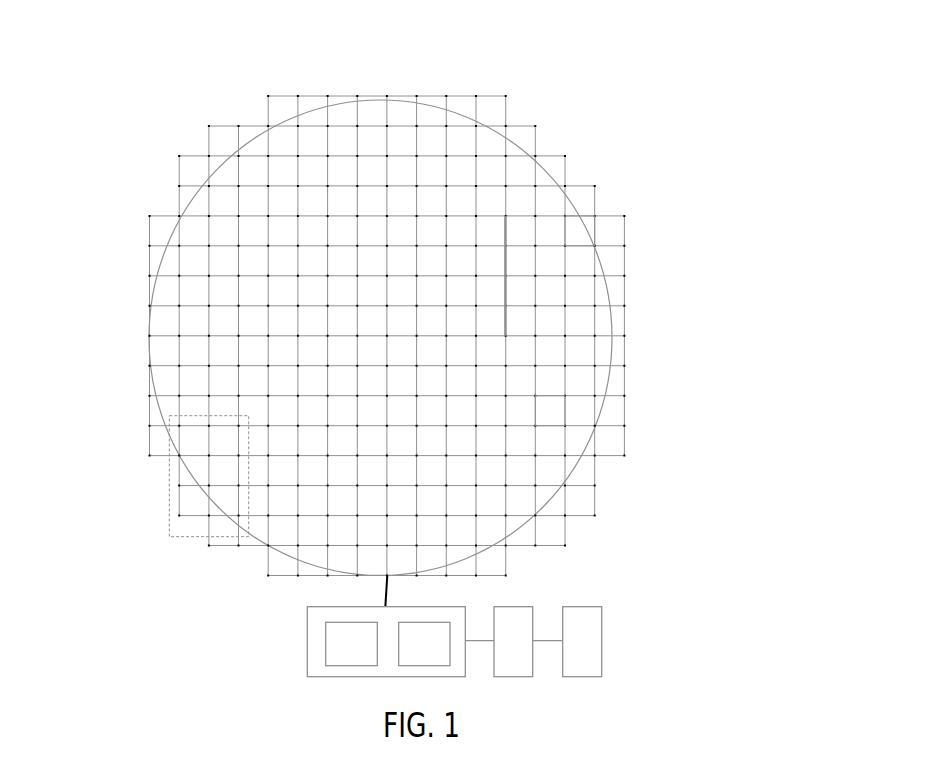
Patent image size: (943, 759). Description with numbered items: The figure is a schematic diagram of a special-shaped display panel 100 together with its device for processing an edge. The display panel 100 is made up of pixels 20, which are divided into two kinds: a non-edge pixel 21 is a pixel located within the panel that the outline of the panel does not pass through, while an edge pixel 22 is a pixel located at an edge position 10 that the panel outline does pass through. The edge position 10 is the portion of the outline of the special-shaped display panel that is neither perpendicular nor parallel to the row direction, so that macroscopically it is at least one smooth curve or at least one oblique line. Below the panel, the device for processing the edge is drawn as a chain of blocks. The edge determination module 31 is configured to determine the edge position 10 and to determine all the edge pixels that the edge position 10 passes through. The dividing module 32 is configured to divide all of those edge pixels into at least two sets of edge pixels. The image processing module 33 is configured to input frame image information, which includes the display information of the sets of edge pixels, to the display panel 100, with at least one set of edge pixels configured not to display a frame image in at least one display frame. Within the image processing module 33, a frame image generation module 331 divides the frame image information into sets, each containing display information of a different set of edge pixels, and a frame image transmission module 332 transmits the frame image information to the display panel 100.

The display panel 100 is at (578, 23).
The edge position 10 is at (609, 288).
The pixels 20 is at (486, 336).
The non-edge pixel 21 is at (549, 412).
The edge pixel 22 is at (573, 223).
The image processing module 33 is at (256, 642).
The frame image generation module 331 is at (352, 643).
The frame image transmission module 332 is at (424, 643).
The dividing module 32 is at (513, 642).
The edge determination module 31 is at (582, 642).